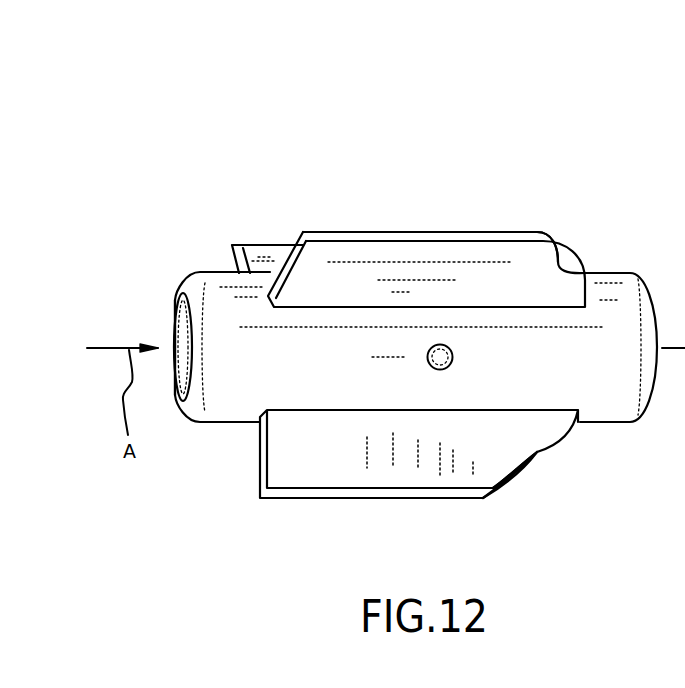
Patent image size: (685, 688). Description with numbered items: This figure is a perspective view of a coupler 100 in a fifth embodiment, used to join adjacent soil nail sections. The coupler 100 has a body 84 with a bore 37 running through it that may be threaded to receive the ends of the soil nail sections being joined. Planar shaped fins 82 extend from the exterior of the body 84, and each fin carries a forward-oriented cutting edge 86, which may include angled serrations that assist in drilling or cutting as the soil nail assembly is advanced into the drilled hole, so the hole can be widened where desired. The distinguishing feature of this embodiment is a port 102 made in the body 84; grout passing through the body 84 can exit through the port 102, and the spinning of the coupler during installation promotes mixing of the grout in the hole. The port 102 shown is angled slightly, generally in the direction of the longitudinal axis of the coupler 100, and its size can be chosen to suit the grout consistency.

The coupler 100 is at (578, 96).
The bore 37 is at (167, 293).
The fins 82 is at (247, 247).
The body 84 is at (298, 378).
The cutting edges 86 is at (563, 265).
The port 102 is at (444, 363).